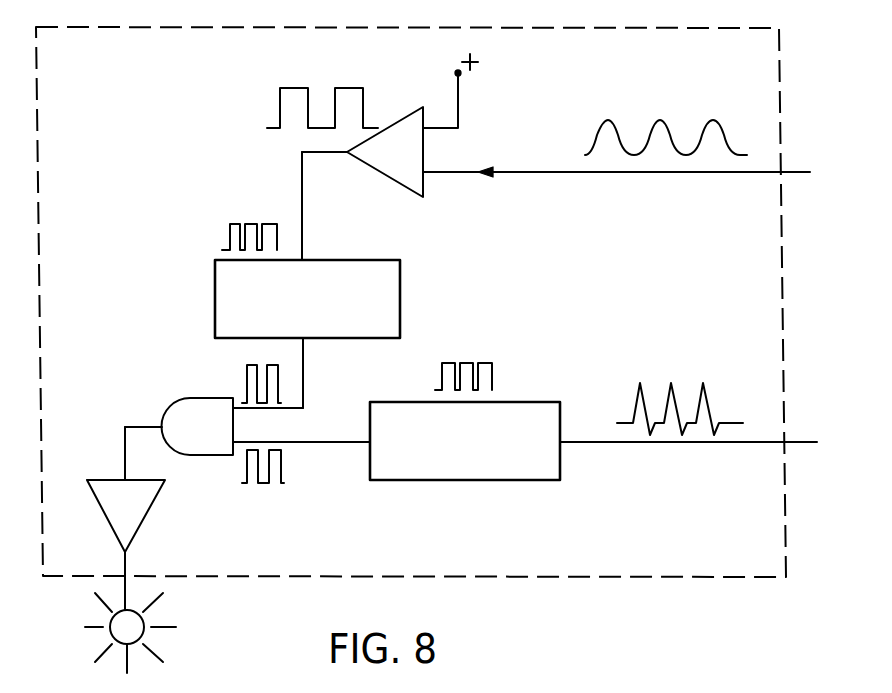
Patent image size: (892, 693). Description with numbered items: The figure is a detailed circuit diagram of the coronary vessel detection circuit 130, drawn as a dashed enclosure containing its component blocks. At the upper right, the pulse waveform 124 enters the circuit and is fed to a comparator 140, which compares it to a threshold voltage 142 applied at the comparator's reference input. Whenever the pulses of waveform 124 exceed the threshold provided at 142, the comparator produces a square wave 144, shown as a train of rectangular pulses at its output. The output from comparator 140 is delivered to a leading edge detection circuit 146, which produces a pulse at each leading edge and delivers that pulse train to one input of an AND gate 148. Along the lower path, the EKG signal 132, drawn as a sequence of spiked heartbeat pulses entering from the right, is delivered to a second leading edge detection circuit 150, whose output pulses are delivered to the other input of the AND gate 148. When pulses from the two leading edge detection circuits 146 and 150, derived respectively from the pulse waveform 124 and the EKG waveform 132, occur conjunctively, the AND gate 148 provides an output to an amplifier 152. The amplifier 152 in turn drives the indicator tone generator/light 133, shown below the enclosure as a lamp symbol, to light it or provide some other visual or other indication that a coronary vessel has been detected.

The coronary vessel detection circuit 130 is at (500, 28).
The pulse waveform 124 is at (671, 127).
The comparator 140 is at (384, 173).
The threshold voltage 142 is at (452, 73).
The square wave 144 is at (280, 108).
The leading edge detection circuit 146 is at (322, 340).
The AND gate 148 is at (192, 397).
The leading edge detection circuit 150 is at (408, 482).
The EKG signal 132 is at (641, 392).
The amplifier 152 is at (160, 496).
The indicator tone generator/light 133 is at (143, 620).